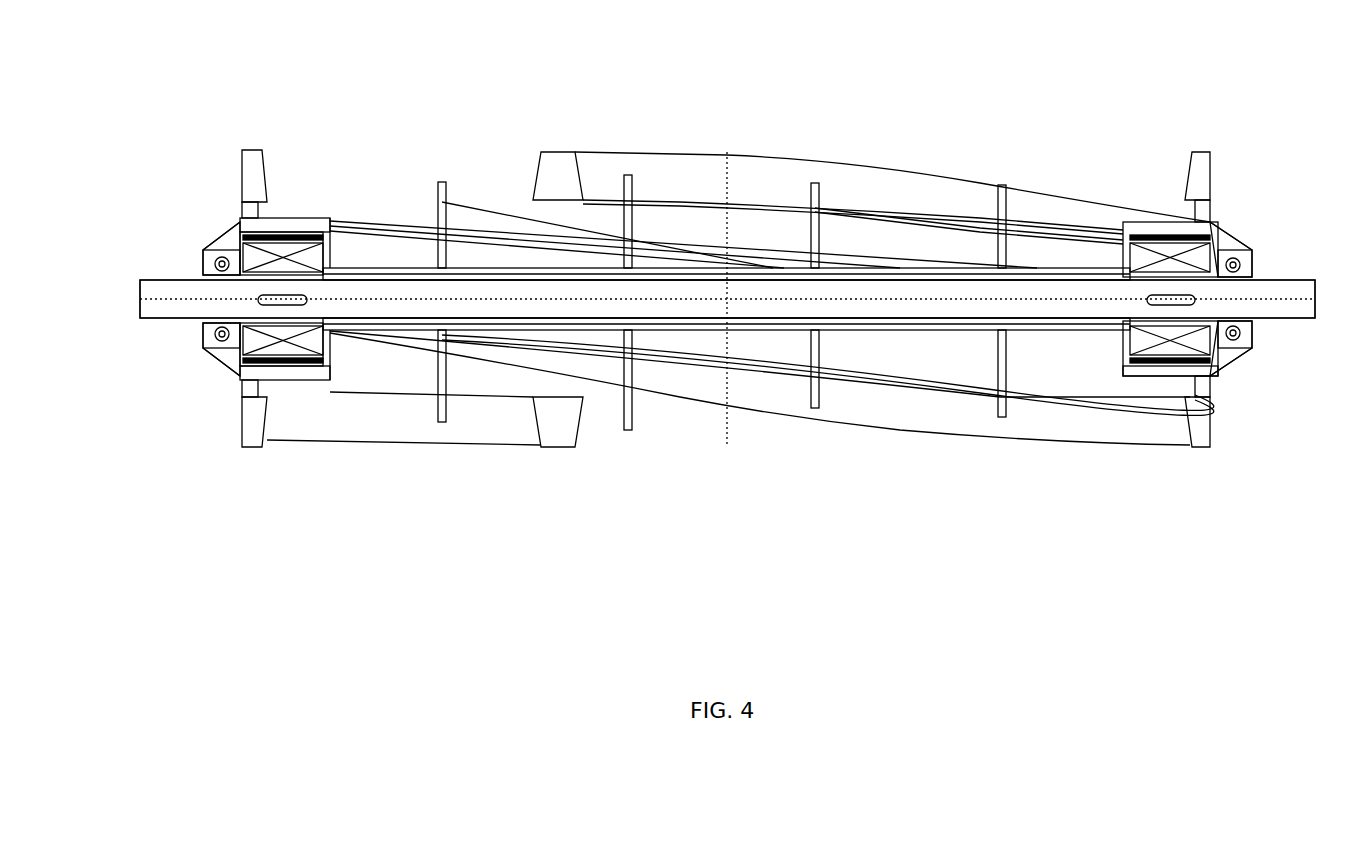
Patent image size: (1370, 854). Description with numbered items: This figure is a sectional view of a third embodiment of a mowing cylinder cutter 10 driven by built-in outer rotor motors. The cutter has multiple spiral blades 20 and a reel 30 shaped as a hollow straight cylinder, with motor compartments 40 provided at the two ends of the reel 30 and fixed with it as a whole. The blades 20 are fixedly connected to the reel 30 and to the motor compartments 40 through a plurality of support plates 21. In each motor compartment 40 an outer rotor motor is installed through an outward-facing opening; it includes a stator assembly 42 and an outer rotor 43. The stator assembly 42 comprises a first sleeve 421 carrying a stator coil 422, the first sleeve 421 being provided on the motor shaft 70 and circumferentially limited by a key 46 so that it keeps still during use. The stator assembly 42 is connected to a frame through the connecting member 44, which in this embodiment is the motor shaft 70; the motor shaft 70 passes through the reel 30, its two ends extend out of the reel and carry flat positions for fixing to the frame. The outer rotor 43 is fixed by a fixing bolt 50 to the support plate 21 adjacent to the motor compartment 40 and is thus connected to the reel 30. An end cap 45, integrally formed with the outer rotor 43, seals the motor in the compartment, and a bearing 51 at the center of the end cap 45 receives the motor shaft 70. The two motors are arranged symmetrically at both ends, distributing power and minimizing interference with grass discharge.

The mowing cylinder cutter 10 is at (156, 74).
The blades 20 is at (762, 190).
The support plates 21 is at (810, 350).
The reel 30 is at (472, 272).
The motor compartments 40 is at (322, 230).
The stator assembly 42 is at (240, 250).
The first sleeve 421 is at (1177, 320).
The stator coil 422 is at (1218, 358).
The outer rotor 43 is at (270, 236).
The connecting member 44 is at (754, 299).
The end cap 45 is at (232, 365).
The key 46 is at (297, 303).
The fixing bolt 50 is at (243, 400).
The bearing 51 is at (208, 262).
The motor shaft 70 is at (1280, 292).